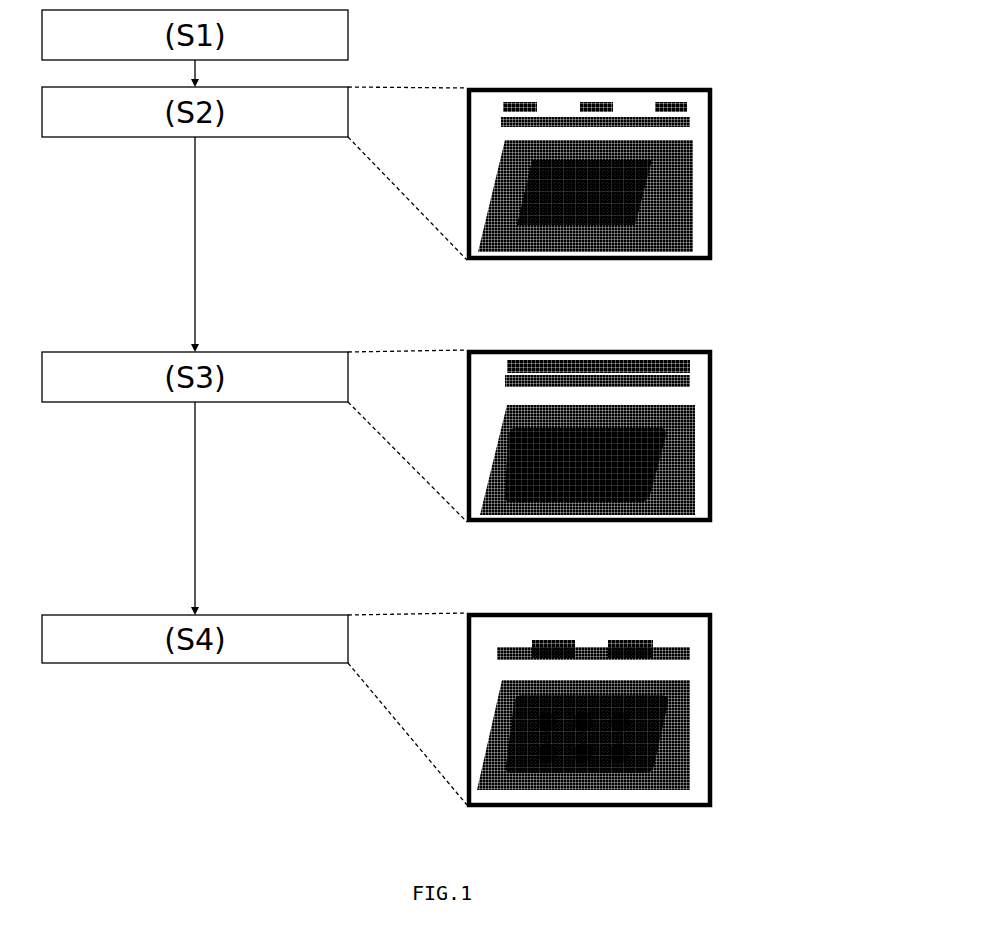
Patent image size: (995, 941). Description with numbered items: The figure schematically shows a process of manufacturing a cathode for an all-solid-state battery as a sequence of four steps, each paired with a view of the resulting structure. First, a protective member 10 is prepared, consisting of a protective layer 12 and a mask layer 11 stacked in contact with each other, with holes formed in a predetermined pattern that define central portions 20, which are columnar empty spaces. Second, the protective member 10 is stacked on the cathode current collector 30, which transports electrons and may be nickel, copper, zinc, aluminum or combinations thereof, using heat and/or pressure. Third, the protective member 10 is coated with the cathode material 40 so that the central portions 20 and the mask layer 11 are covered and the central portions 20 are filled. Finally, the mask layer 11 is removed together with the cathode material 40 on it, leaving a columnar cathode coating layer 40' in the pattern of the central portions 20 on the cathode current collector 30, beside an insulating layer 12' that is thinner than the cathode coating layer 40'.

The protective member 10 is at (790, 27).
The mask layer 11 is at (678, 102).
The protective layer 12 is at (640, 266).
The insulating layer 12' is at (638, 665).
The central portions 20 is at (545, 168).
The cathode current collector 30 is at (692, 140).
The cathode material 40 is at (629, 407).
The cathode coating layer 40' is at (604, 713).